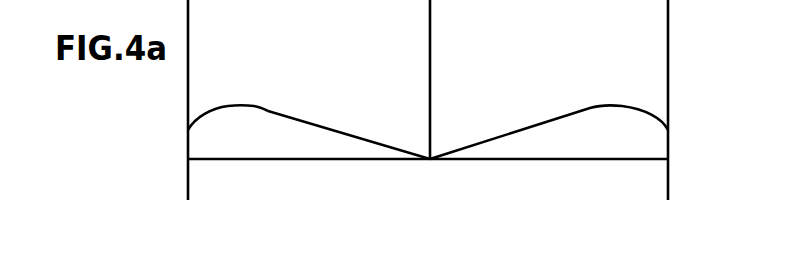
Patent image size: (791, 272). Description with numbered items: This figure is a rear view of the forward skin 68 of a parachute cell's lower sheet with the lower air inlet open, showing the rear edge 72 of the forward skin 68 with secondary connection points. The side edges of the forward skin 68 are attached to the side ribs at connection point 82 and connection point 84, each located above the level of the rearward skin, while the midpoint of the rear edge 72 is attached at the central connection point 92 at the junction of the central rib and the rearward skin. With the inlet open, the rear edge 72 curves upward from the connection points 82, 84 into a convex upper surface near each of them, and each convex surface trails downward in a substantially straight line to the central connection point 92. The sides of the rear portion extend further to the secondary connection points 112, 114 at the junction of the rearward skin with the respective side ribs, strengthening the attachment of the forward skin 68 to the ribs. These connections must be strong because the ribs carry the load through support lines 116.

The forward skin 68 is at (284, 116).
The rear edge 72 is at (238, 107).
The connection point 82 is at (190, 131).
The connection point 84 is at (668, 128).
The central connection point 92 is at (428, 160).
The secondary connection point 112 is at (188, 160).
The secondary connection point 114 is at (668, 160).
The support lines 116 is at (190, 175).